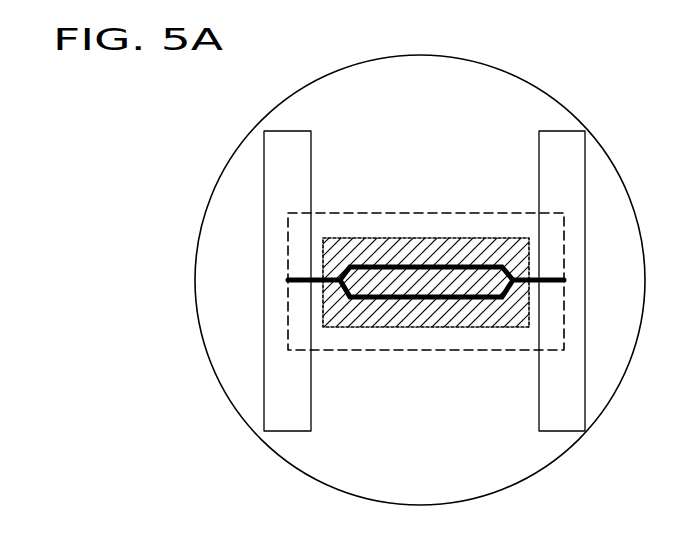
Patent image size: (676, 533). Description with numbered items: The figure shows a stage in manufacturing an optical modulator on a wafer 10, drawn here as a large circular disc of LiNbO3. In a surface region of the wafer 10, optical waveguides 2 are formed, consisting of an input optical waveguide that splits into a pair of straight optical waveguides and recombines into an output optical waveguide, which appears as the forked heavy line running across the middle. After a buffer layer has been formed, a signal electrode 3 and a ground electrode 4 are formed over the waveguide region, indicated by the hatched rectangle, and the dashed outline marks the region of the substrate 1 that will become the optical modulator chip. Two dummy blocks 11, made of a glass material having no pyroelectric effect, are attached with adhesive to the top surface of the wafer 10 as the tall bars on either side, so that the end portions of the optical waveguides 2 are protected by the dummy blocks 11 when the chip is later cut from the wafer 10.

The wafer 10 is at (533, 82).
The dummy blocks 11 is at (288, 410).
The substrate 1 is at (363, 350).
The signal electrode 3 is at (428, 242).
The ground electrode 4 is at (420, 233).
The optical waveguides 2 is at (447, 300).